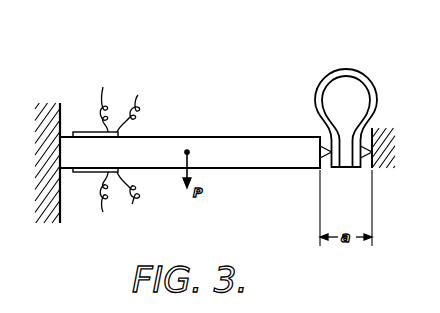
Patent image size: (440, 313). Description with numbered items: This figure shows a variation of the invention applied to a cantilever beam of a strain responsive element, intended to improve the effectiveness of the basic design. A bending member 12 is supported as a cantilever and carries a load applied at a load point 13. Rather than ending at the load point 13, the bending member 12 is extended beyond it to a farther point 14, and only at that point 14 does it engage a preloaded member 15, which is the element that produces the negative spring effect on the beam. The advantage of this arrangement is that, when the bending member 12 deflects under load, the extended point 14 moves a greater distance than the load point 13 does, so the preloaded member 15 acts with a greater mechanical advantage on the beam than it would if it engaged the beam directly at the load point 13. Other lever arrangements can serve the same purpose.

The bending member 12 is at (240, 124).
The load point 13 is at (187, 152).
The point 14 is at (320, 152).
The preloaded member 15 is at (385, 60).